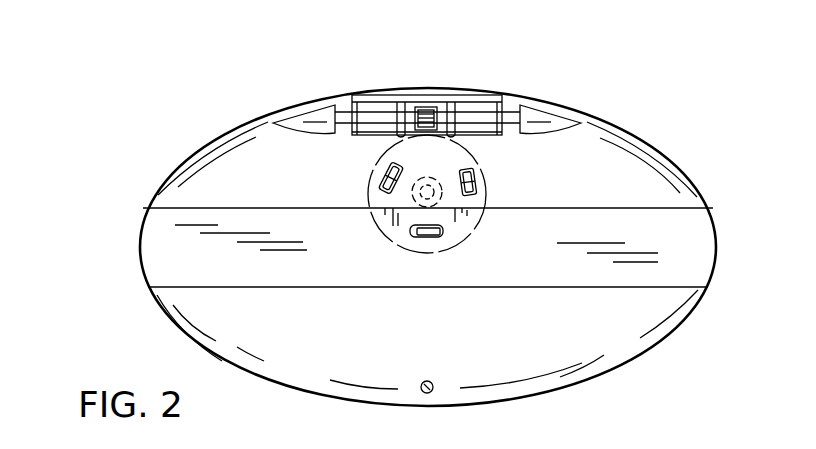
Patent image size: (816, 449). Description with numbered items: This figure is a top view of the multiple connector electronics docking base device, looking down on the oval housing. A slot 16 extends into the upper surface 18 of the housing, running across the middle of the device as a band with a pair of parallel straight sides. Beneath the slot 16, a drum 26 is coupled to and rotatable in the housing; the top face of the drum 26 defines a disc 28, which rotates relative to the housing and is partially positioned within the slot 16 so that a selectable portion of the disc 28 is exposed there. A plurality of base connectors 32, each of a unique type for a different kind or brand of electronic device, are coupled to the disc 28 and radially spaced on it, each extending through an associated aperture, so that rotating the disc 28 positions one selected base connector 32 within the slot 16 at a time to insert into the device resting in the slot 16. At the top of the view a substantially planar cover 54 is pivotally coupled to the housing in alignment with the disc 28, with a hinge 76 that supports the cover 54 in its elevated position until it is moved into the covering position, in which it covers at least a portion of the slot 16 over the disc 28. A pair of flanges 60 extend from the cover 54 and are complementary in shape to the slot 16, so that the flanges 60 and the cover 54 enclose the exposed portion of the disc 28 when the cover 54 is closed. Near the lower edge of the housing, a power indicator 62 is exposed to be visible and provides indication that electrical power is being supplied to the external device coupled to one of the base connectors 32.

The slot 16 is at (693, 248).
The upper surface 18 is at (546, 335).
The drum 26 is at (465, 222).
The disc 28 is at (393, 230).
The base connectors 32 is at (372, 162).
The cover 54 is at (420, 98).
The flanges 60 is at (353, 98).
The power indicator 62 is at (433, 380).
The hinge 76 is at (431, 118).